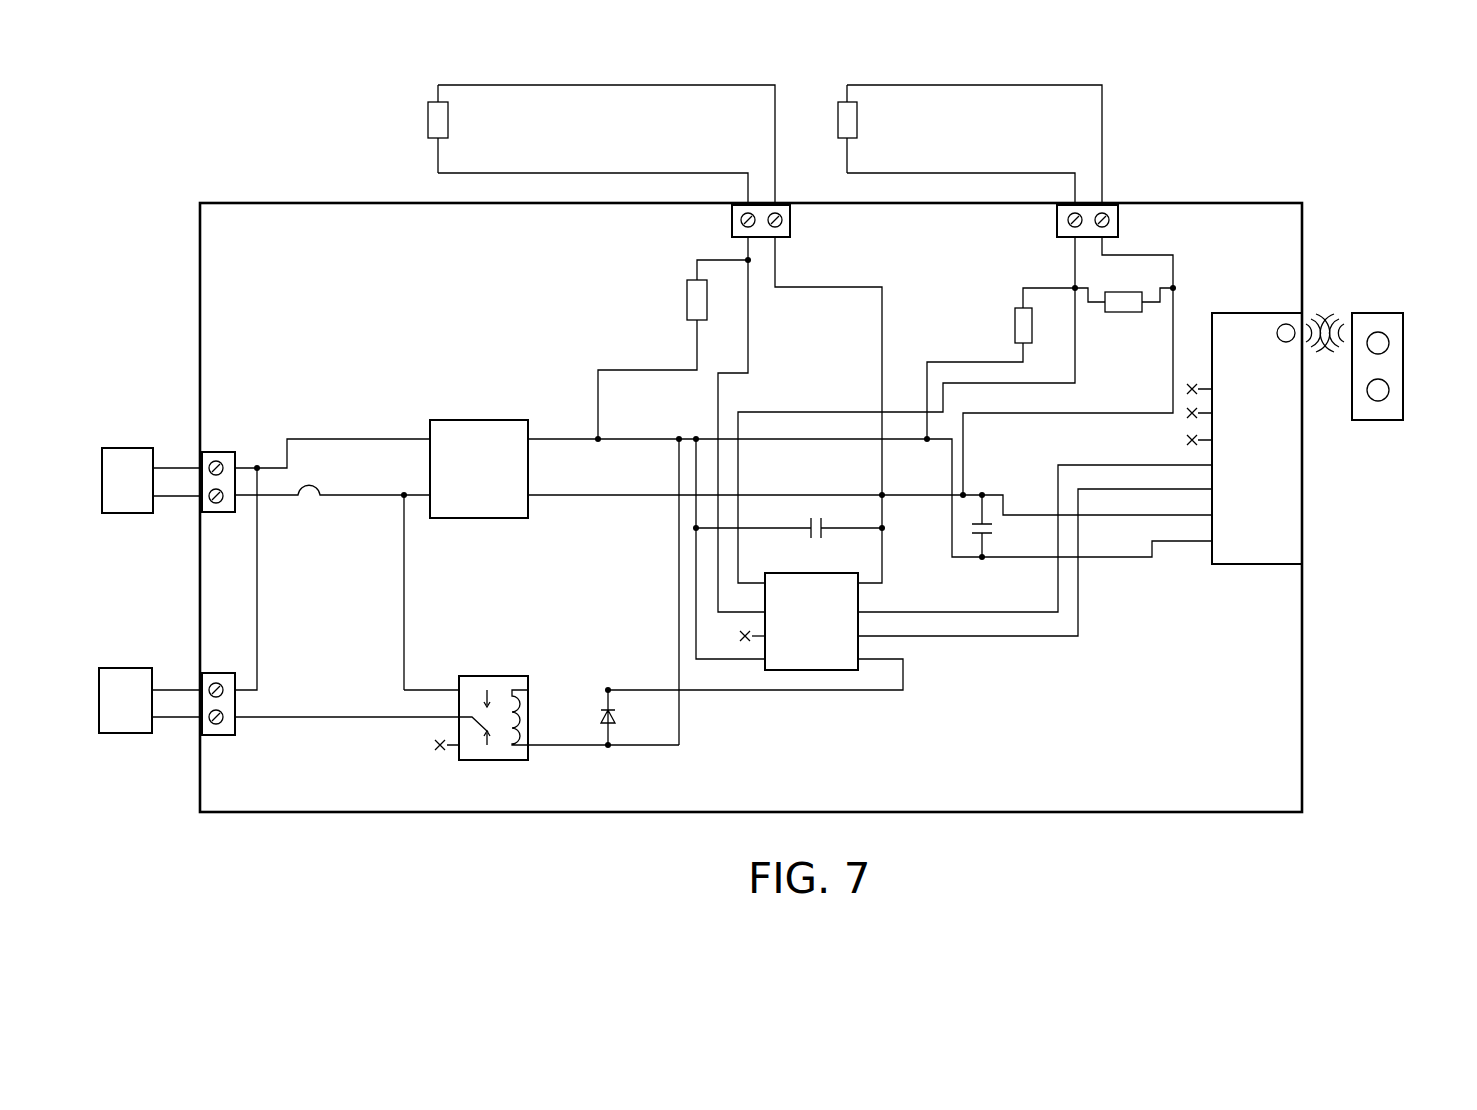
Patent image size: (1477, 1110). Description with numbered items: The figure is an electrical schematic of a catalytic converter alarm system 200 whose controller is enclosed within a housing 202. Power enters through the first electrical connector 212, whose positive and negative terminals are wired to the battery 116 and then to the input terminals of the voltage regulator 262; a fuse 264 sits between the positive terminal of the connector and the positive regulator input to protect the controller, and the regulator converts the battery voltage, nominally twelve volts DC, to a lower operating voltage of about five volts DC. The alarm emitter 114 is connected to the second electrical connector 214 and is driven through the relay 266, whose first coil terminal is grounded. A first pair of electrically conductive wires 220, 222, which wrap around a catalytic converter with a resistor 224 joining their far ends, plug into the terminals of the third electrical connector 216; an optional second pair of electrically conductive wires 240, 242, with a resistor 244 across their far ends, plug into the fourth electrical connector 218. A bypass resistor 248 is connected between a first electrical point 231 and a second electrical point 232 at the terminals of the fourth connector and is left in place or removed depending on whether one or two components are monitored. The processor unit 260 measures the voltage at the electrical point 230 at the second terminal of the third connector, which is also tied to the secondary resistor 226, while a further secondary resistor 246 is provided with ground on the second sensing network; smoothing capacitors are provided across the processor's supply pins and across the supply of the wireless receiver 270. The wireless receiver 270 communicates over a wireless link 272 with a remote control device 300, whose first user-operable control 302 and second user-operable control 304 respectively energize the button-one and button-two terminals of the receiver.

The alarm system 200 is at (236, 74).
The housing 202 is at (270, 203).
The first electrically conductive wire 220 is at (592, 85).
The second electrically conductive wire 222 is at (592, 173).
The resistor 224 is at (428, 120).
The first electrically conductive wire of second pair 240 is at (965, 85).
The second electrically conductive wire of second pair 242 is at (965, 173).
The resistor 244 is at (838, 120).
The third electrical connector 216 is at (732, 219).
The fourth electrical connector 218 is at (1057, 219).
The electrical point 230 is at (745, 260).
The secondary resistor 226 is at (687, 300).
The second electrical point 232 is at (1072, 288).
The first electrical point 231 is at (1175, 288).
The secondary resistor 246 is at (1015, 325).
The bypass resistor 248 is at (1130, 312).
The voltage regulator 262 is at (445, 420).
The fuse 264 is at (314, 505).
The processor unit 260 is at (865, 670).
The relay 266 is at (478, 760).
The wireless receiver 270 is at (1250, 564).
The wireless link 272 is at (1338, 325).
The remote control device 300 is at (1370, 420).
The first user-operable control 302 is at (1380, 333).
The second user-operable control 304 is at (1380, 400).
The battery 116 is at (135, 448).
The first electrical connector 212 is at (216, 452).
The alarm emitter 114 is at (143, 630).
The second electrical connector 214 is at (216, 735).